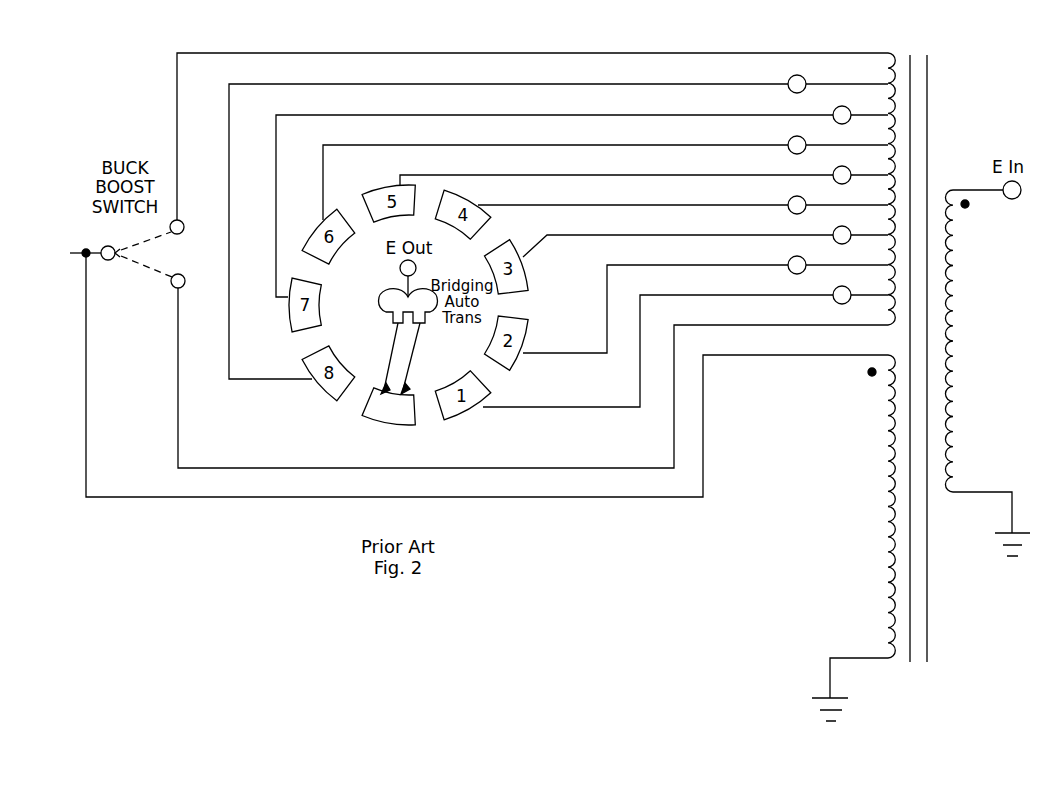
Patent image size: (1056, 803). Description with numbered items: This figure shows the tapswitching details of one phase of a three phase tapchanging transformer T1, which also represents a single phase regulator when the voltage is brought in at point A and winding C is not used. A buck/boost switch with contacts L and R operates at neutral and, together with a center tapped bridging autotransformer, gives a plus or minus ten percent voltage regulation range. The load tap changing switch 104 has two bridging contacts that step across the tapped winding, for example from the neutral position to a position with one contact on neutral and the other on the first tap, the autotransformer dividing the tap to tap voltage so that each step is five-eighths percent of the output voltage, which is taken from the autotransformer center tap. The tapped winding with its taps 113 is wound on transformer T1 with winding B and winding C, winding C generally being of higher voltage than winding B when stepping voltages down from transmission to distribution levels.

The transformer tap terminals 113 is at (798, 76).
The switch 104 is at (388, 428).
The transformer T1 is at (908, 342).
The point A is at (88, 253).
The winding B is at (880, 504).
The winding C is at (956, 330).
The buck/boost switch left contact L is at (183, 218).
The buck/boost switch right contact R is at (186, 290).